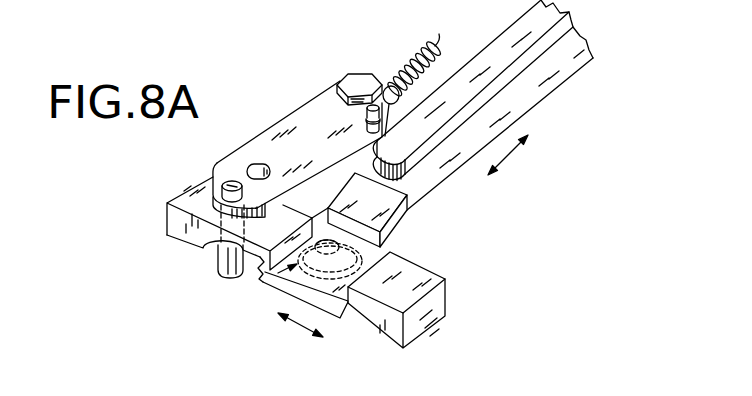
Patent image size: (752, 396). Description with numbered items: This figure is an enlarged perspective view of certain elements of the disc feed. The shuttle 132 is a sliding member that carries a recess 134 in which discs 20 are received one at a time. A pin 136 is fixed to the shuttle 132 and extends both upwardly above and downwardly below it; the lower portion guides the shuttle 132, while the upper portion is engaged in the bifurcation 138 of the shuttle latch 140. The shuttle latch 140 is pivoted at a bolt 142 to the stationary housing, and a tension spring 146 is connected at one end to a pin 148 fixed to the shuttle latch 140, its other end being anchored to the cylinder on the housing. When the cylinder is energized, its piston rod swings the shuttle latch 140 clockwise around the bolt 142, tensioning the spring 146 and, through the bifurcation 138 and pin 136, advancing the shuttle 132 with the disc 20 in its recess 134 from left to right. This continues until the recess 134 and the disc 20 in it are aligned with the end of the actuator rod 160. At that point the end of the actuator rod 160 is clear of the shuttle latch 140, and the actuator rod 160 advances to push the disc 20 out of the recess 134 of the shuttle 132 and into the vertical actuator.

The disc 20 is at (262, 282).
The shuttle 132 is at (450, 288).
The recess 134 is at (336, 292).
The pin 136 is at (190, 204).
The bifurcation 138 is at (262, 173).
The shuttle latch 140 is at (265, 152).
The bolt 142 is at (352, 78).
The tension spring 146 is at (434, 46).
The pin 148 is at (367, 109).
The actuator rod 160 is at (545, 92).